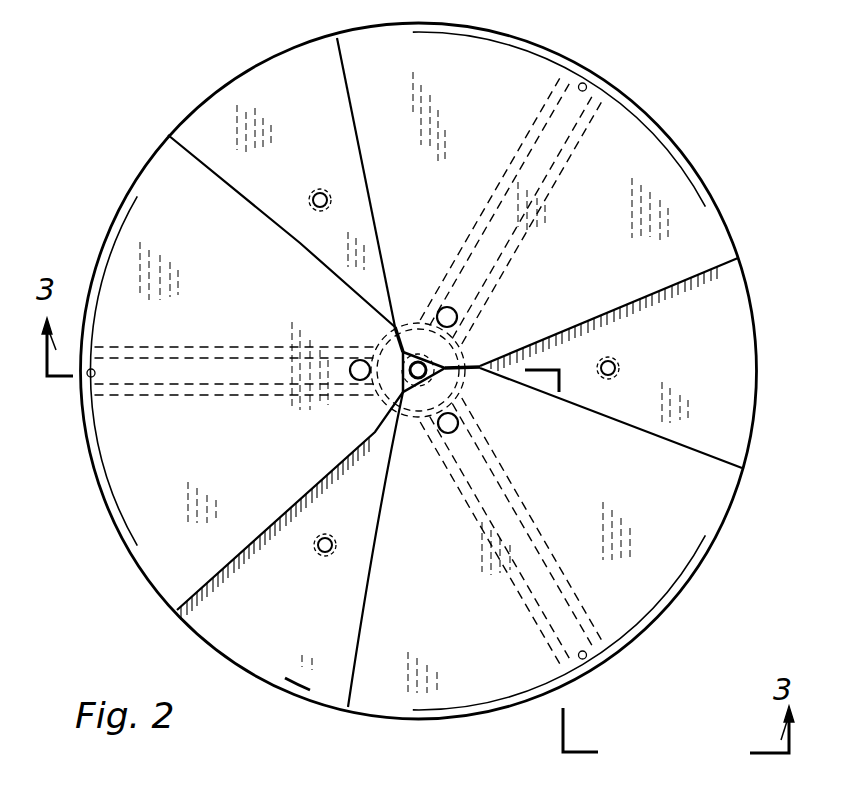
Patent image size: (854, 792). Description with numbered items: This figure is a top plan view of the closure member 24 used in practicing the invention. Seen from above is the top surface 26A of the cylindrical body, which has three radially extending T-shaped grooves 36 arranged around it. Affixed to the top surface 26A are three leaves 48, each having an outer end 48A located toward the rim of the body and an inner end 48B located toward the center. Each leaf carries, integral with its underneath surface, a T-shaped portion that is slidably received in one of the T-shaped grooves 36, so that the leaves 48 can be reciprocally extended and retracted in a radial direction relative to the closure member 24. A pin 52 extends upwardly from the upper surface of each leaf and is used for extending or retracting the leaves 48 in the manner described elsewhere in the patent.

The closure member 24 is at (738, 511).
The top surface 26A is at (297, 676).
The T-shaped grooves 36 is at (537, 196).
The leaves 48 is at (630, 285).
The outer end 48A is at (468, 30).
The inner end 48B is at (462, 365).
The pin 52 is at (359, 359).